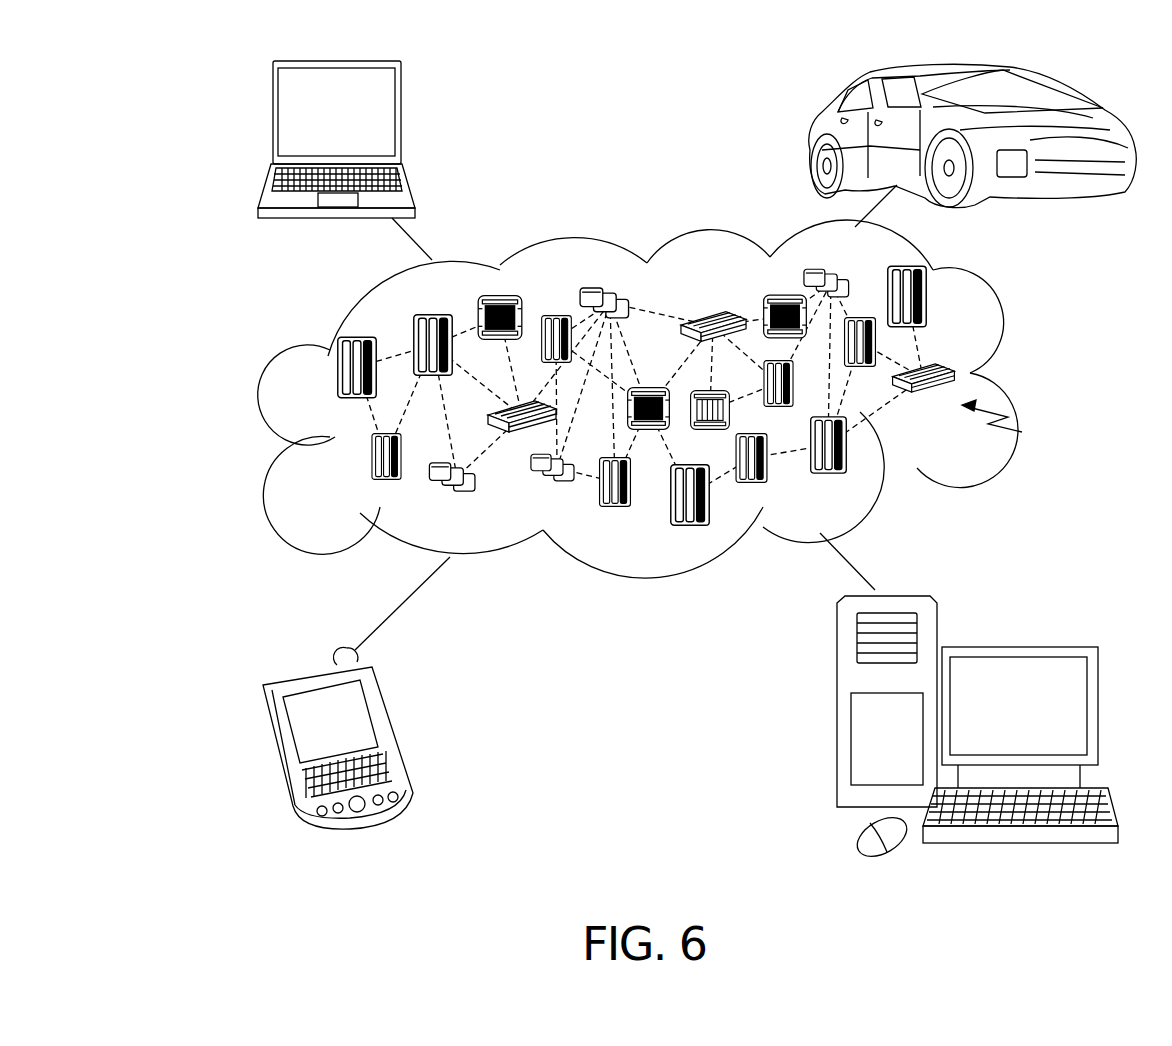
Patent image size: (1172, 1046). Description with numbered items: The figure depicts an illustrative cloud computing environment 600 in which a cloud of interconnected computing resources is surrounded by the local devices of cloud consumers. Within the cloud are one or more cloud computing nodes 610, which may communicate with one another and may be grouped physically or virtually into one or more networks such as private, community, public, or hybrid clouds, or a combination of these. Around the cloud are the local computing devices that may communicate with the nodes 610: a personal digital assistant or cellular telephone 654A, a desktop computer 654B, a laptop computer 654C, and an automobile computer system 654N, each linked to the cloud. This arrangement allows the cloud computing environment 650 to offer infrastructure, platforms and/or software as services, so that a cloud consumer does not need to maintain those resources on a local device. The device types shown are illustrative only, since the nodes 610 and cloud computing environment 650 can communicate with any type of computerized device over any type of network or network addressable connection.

The cloud computing environment 600 is at (117, 88).
The cloud computing nodes 610 is at (1014, 425).
The cloud computing environment 650 is at (1018, 378).
The personal digital assistant or cellular telephone 654A is at (390, 733).
The desktop computer 654B is at (1015, 645).
The laptop computer 654C is at (401, 117).
The automobile computer system 654N is at (808, 135).